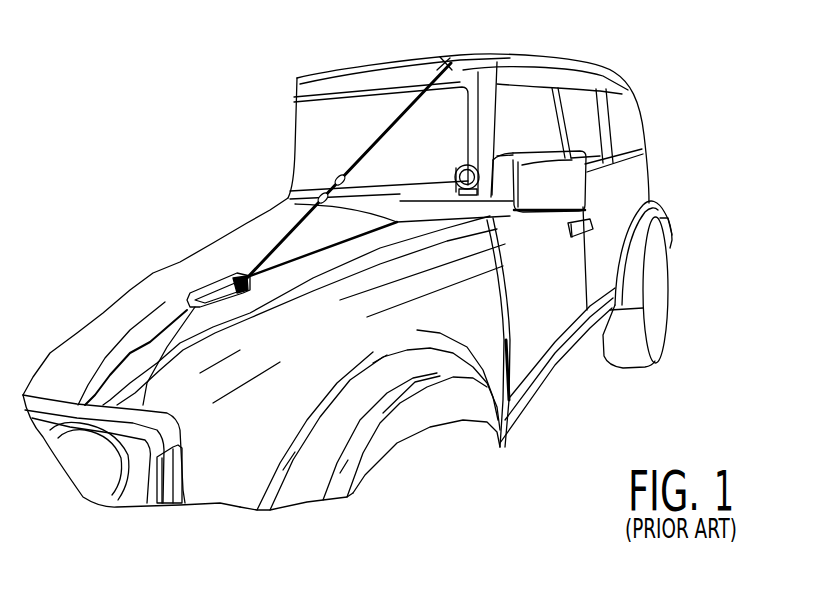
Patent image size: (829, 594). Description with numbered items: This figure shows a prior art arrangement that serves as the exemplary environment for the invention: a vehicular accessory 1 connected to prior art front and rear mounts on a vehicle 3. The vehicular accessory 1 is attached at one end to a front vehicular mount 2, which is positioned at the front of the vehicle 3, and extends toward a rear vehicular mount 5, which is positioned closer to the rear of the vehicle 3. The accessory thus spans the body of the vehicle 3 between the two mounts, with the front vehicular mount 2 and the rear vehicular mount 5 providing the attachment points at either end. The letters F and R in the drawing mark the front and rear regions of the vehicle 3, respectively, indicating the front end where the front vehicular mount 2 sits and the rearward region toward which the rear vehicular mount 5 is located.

The vehicular accessory 1 is at (361, 157).
The front vehicular mount 2 is at (173, 313).
The vehicle 3 is at (570, 49).
The rear vehicular mount 5 is at (442, 66).
The front of vehicle F is at (238, 449).
The rear of vehicle R is at (627, 180).